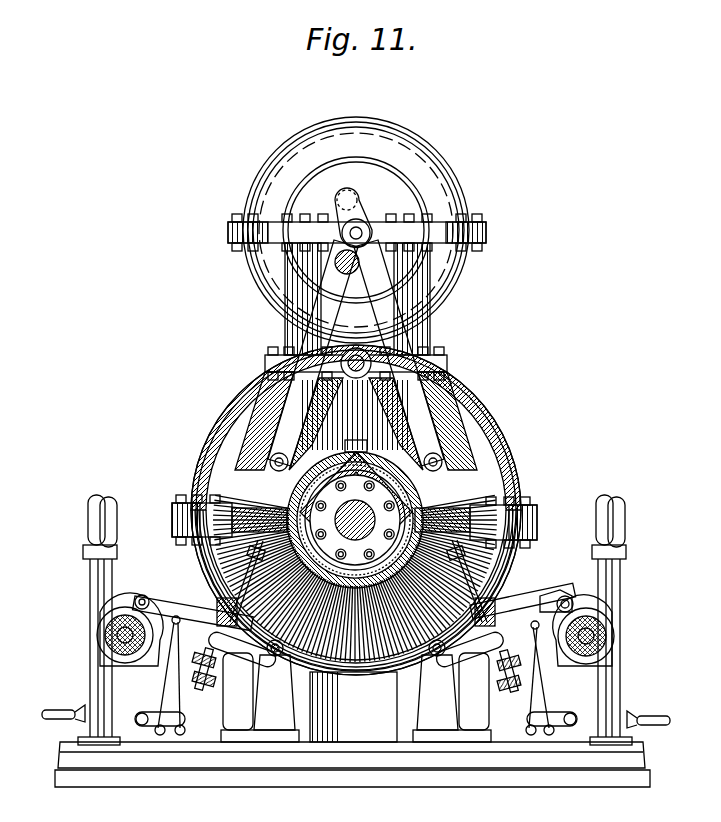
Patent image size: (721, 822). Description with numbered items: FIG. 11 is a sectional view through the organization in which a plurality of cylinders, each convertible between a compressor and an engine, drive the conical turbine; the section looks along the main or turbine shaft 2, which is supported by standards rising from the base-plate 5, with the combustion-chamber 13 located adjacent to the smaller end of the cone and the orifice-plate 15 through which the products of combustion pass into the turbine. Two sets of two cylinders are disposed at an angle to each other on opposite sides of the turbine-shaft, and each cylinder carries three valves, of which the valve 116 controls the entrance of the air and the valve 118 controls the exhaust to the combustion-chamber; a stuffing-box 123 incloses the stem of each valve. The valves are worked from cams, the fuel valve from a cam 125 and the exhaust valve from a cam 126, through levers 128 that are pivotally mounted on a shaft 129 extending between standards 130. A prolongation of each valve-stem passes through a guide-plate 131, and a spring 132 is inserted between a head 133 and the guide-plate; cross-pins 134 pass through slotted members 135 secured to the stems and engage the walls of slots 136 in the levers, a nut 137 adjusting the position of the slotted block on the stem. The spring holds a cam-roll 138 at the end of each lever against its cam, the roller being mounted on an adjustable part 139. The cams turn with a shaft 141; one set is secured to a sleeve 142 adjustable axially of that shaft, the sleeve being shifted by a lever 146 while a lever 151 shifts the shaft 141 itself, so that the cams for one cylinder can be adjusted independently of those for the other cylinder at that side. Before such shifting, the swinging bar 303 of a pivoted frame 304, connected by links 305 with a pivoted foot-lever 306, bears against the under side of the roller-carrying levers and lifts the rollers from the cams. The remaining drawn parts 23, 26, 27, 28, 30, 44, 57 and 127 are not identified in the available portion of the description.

The main shaft 2 is at (355, 520).
The base-plate 5 is at (418, 772).
The combustion-chamber 13 is at (395, 552).
The orifice-plate 15 is at (355, 520).
The rim 23 is at (235, 435).
The pin 26 is at (338, 268).
The rod 27 is at (316, 412).
The boss 28 is at (357, 232).
The wheel 30 is at (357, 236).
The bolt 44 is at (355, 520).
The cap 57 is at (356, 452).
The air valve 116 is at (512, 492).
The exhaust valve 118 is at (192, 494).
The stuffing-box 123 is at (468, 418).
The cam 125 is at (356, 348).
The cam 126 is at (100, 618).
The gear teeth 127 is at (355, 578).
The lever 128 is at (244, 664).
The shaft 129 is at (356, 662).
The standards 130 is at (356, 698).
The guide-plate 131 is at (512, 658).
The spring 132 is at (518, 680).
The head 133 is at (512, 692).
The cross-pins 134 is at (525, 596).
The slotted members 135 is at (465, 661).
The slots 136 is at (483, 645).
The nut 137 is at (259, 581).
The cam-roll 138 is at (574, 605).
The roller-carrying part 139 is at (566, 597).
The shaft 141 is at (118, 636).
The sleeve 142 is at (112, 650).
The lever 146 is at (88, 566).
The lever 151 is at (100, 680).
The swinging bar 303 is at (158, 598).
The pivoted frame 304 is at (175, 669).
The links 305 is at (178, 705).
The foot-lever 306 is at (55, 713).